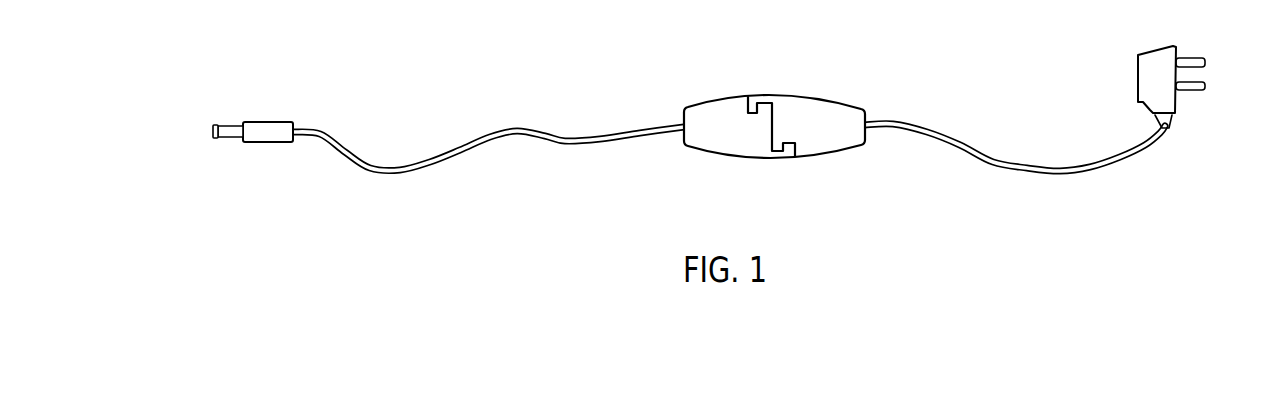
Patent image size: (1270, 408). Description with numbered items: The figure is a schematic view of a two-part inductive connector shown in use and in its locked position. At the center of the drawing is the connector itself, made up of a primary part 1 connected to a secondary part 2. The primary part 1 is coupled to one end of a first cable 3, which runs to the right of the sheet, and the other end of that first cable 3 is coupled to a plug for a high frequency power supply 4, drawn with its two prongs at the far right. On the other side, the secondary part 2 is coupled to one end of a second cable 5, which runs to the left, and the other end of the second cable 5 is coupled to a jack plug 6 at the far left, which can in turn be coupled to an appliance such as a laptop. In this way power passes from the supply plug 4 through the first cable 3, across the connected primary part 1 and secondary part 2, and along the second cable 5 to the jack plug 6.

The primary part 1 is at (831, 134).
The secondary part 2 is at (738, 134).
The first cable 3 is at (1055, 173).
The plug for a high frequency power supply 4 is at (1150, 87).
The second cable 5 is at (481, 133).
The jack plug 6 is at (268, 128).